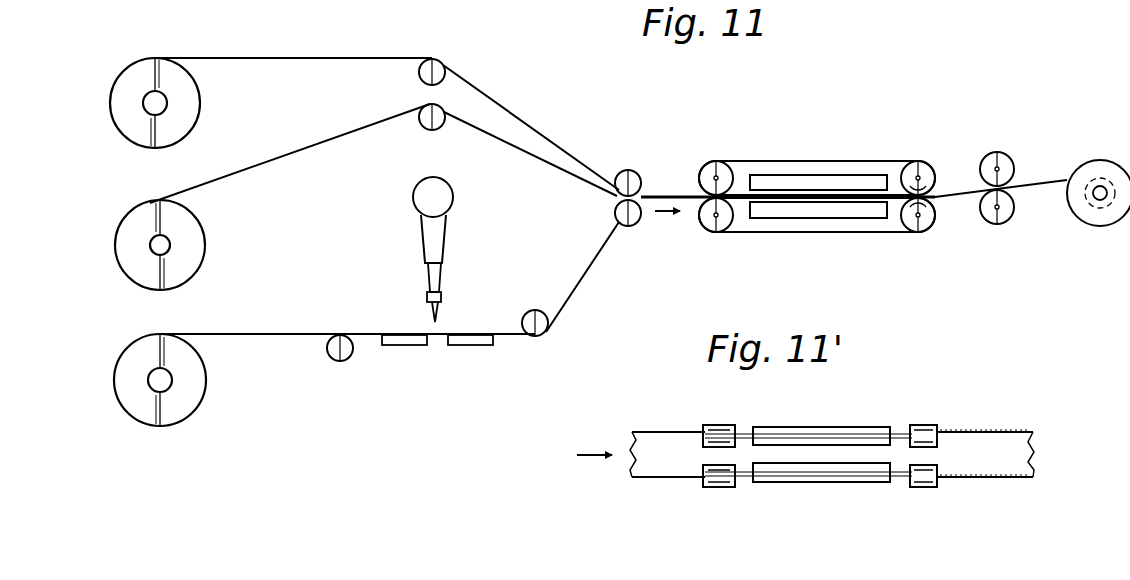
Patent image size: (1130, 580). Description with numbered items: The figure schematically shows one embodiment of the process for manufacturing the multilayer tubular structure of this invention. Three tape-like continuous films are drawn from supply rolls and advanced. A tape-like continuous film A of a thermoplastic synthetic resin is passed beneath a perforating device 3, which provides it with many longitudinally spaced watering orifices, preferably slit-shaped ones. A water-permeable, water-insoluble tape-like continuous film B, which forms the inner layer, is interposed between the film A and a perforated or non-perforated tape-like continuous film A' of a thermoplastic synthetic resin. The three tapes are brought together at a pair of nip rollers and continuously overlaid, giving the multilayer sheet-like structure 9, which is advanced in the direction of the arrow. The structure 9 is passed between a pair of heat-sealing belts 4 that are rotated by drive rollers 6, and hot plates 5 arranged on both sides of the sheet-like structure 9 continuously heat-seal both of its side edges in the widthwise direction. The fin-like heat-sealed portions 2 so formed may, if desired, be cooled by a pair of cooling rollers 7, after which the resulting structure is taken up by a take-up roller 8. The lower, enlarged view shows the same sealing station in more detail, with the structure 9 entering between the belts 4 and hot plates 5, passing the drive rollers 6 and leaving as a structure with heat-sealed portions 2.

In FIG. 11', the fin-like heat-sealed portions 2 is at (1000, 430).
In FIG. 11, the perforating device 3 is at (455, 227).
In FIG. 11, the heat-sealing belts 4 is at (746, 160).
In FIG. 11', the heat-sealing belts 4 is at (744, 424).
In FIG. 11, the hot plates 5 is at (832, 178).
In FIG. 11', the hot plates 5 is at (851, 426).
In FIG. 11, the drive rollers 6 is at (943, 200).
In FIG. 11', the drive rollers 6 is at (925, 424).
In FIG. 11, the cooling rollers 7 is at (1019, 188).
In FIG. 11, the take-up roller 8 is at (1105, 160).
In FIG. 11, the multilayer sheet-like structure 9 is at (670, 196).
In FIG. 11', the multilayer sheet-like structure 9 is at (678, 479).
In FIG. 11, the tape-like continuous film A is at (582, 277).
In FIG. 11, the perforated or non-perforated tape-like continuous film A' is at (531, 127).
In FIG. 11, the water-permeable, water-insoluble tape-like continuous film B is at (511, 142).